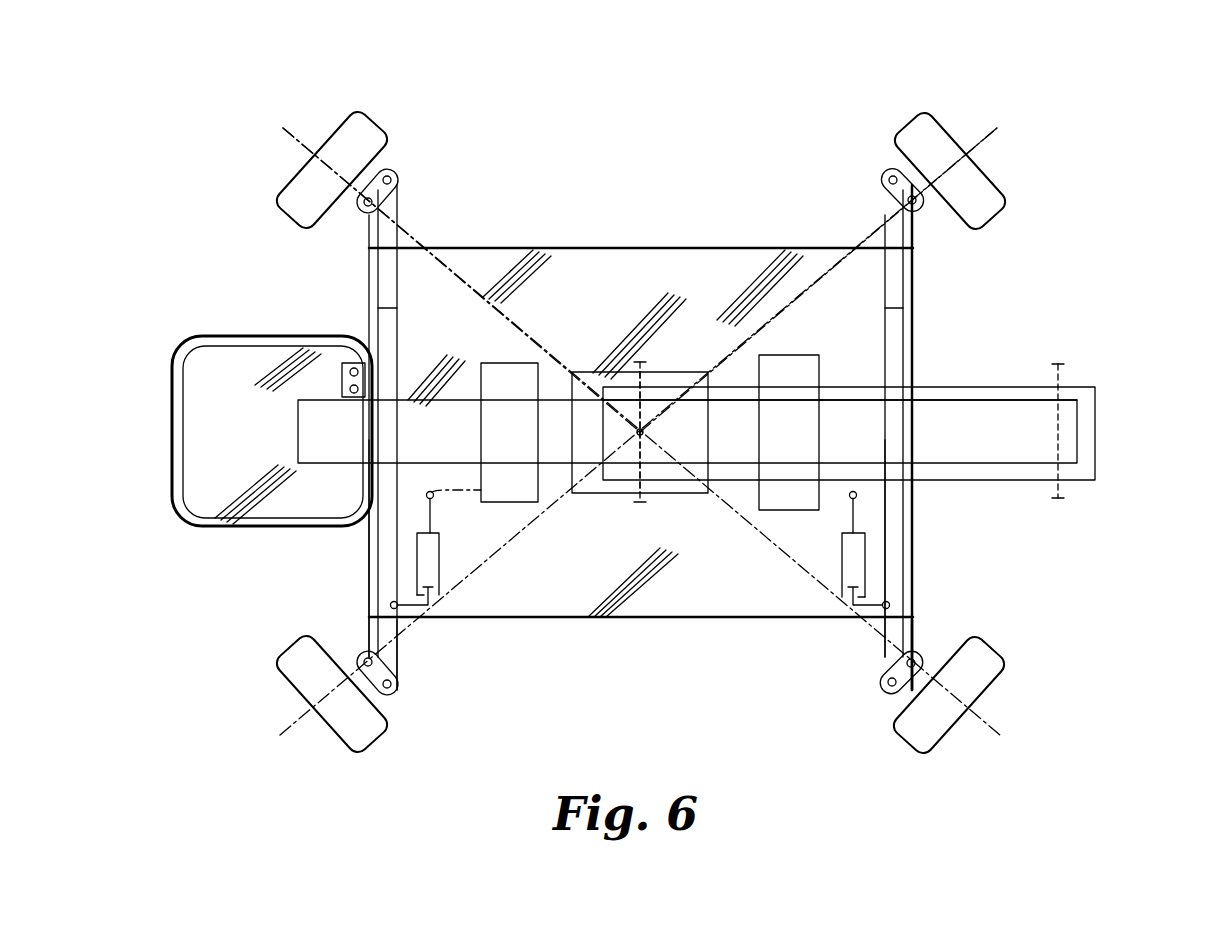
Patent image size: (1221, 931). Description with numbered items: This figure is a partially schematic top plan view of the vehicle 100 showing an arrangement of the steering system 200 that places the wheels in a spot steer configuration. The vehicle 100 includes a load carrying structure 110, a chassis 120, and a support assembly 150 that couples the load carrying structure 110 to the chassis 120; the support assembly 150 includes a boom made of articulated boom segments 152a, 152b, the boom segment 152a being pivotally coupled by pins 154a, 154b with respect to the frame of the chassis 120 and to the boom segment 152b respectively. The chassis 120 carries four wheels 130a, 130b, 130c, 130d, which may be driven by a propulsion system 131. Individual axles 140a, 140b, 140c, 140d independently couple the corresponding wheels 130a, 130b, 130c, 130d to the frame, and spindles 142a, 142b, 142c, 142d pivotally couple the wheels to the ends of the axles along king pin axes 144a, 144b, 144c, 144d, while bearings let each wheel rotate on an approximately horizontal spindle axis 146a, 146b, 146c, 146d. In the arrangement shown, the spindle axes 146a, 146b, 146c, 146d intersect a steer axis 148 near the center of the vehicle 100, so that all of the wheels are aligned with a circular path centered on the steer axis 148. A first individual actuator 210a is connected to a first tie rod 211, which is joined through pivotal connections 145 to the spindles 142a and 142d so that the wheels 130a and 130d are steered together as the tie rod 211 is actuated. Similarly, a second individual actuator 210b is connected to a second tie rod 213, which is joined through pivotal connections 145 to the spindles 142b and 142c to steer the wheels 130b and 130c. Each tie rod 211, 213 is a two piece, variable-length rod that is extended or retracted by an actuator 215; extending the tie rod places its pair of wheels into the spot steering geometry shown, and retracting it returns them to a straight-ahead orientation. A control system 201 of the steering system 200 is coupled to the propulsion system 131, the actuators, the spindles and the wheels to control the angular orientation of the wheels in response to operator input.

The vehicle 100 is at (1108, 88).
The load carrying structure 110 is at (168, 434).
The chassis 120 is at (663, 624).
The wheel 130a is at (288, 692).
The wheel 130b is at (987, 690).
The wheel 130c is at (990, 170).
The wheel 130d is at (290, 178).
The propulsion system 131 is at (750, 495).
The axle 140a is at (365, 635).
The axle 140b is at (913, 633).
The axle 140c is at (915, 240).
The axle 140d is at (366, 232).
The spindle 142a is at (352, 658).
The spindle 142b is at (932, 655).
The spindle 142c is at (925, 205).
The spindle 142d is at (366, 222).
The king pin axis 144a is at (357, 703).
The king pin axis 144b is at (945, 725).
The king pin axis 144c is at (950, 142).
The king pin axis 144d is at (363, 190).
The pivotal connection 145 is at (391, 180).
The spindle axis 146a is at (465, 582).
The spindle axis 146b is at (832, 600).
The spindle axis 146c is at (820, 243).
The spindle axis 146d is at (461, 247).
The steer axis 148 is at (638, 428).
The support assembly 150 is at (737, 377).
The boom segment 152a is at (958, 387).
The boom segment 152b is at (1012, 400).
The pin 154a is at (638, 498).
The pin 154b is at (1060, 433).
The steering system 200 is at (507, 352).
The control system 201 is at (334, 383).
The first individual actuator 210a is at (408, 565).
The second individual actuator 210b is at (874, 565).
The first tie rod 211 is at (400, 663).
The second tie rod 213 is at (905, 590).
The actuator 215 is at (380, 332).